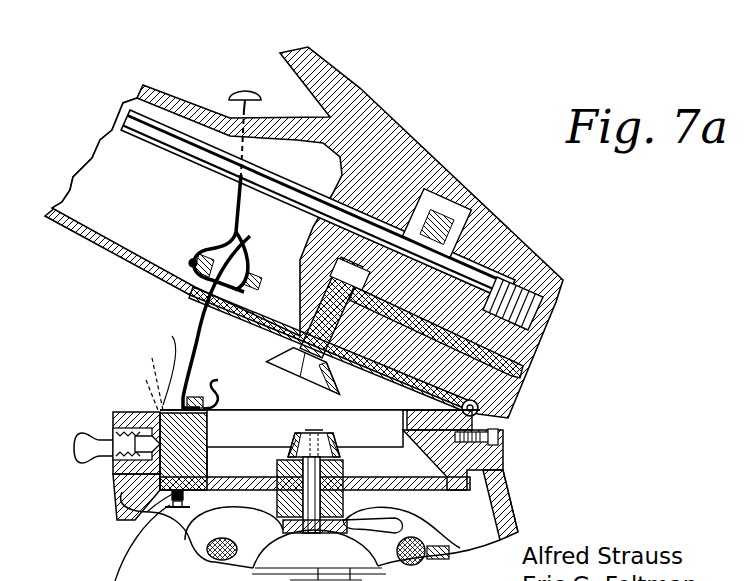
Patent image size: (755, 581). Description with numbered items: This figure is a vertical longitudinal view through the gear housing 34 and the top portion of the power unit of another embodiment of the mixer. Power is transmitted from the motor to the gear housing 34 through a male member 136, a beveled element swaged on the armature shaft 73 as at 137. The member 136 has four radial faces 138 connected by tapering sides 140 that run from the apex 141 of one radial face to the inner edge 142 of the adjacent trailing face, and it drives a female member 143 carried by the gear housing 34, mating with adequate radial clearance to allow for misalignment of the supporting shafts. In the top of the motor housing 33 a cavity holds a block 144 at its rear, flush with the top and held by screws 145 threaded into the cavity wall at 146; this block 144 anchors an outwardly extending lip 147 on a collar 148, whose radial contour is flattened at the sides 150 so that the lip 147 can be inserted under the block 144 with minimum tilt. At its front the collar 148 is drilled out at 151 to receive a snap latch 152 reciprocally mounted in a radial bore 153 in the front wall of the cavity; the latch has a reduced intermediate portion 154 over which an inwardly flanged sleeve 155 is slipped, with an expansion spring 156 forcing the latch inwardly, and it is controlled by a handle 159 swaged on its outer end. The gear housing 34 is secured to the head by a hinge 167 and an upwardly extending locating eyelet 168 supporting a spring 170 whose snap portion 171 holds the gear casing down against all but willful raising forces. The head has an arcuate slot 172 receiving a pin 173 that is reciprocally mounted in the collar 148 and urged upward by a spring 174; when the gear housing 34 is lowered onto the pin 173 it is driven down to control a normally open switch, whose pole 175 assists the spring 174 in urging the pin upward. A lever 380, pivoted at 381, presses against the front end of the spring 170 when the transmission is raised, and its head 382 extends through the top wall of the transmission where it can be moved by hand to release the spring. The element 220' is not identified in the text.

The motor housing 33 is at (520, 532).
The gear housing 34 is at (418, 142).
The armature shaft 73 is at (312, 530).
The male member 136 is at (350, 420).
The swaged connection 137 is at (288, 433).
The radial faces 138 is at (340, 442).
The tapering sides 140 is at (297, 433).
The apex 141 is at (290, 461).
The inner edge 142 is at (345, 459).
The female member 143 is at (305, 384).
The block 144 is at (503, 456).
The screws 145 is at (500, 436).
The threaded wall portion 146 is at (505, 424).
The lip 147 is at (500, 478).
The collar 148 is at (507, 502).
The flattened sides 150 is at (245, 463).
The drilled hole 151 is at (147, 440).
The snap latch 152 is at (115, 467).
The radial bore 153 is at (130, 470).
The reduced intermediate portion 154 is at (100, 436).
The inwardly flanged sleeve 155 is at (115, 432).
The expansion spring 156 is at (117, 425).
The handle 159 is at (105, 448).
The hinge 167 is at (500, 406).
The locating eyelet 168 is at (192, 398).
The spring 170 is at (193, 305).
The snap portion 171 is at (210, 388).
The arcuate slot 172 is at (144, 377).
The pin 173 is at (158, 364).
The spring 174 is at (136, 388).
The switch pole 175 is at (147, 512).
The channel housing 220' is at (297, 217).
The lever 380 is at (238, 192).
The pivot 381 is at (190, 262).
The head 382 is at (247, 88).